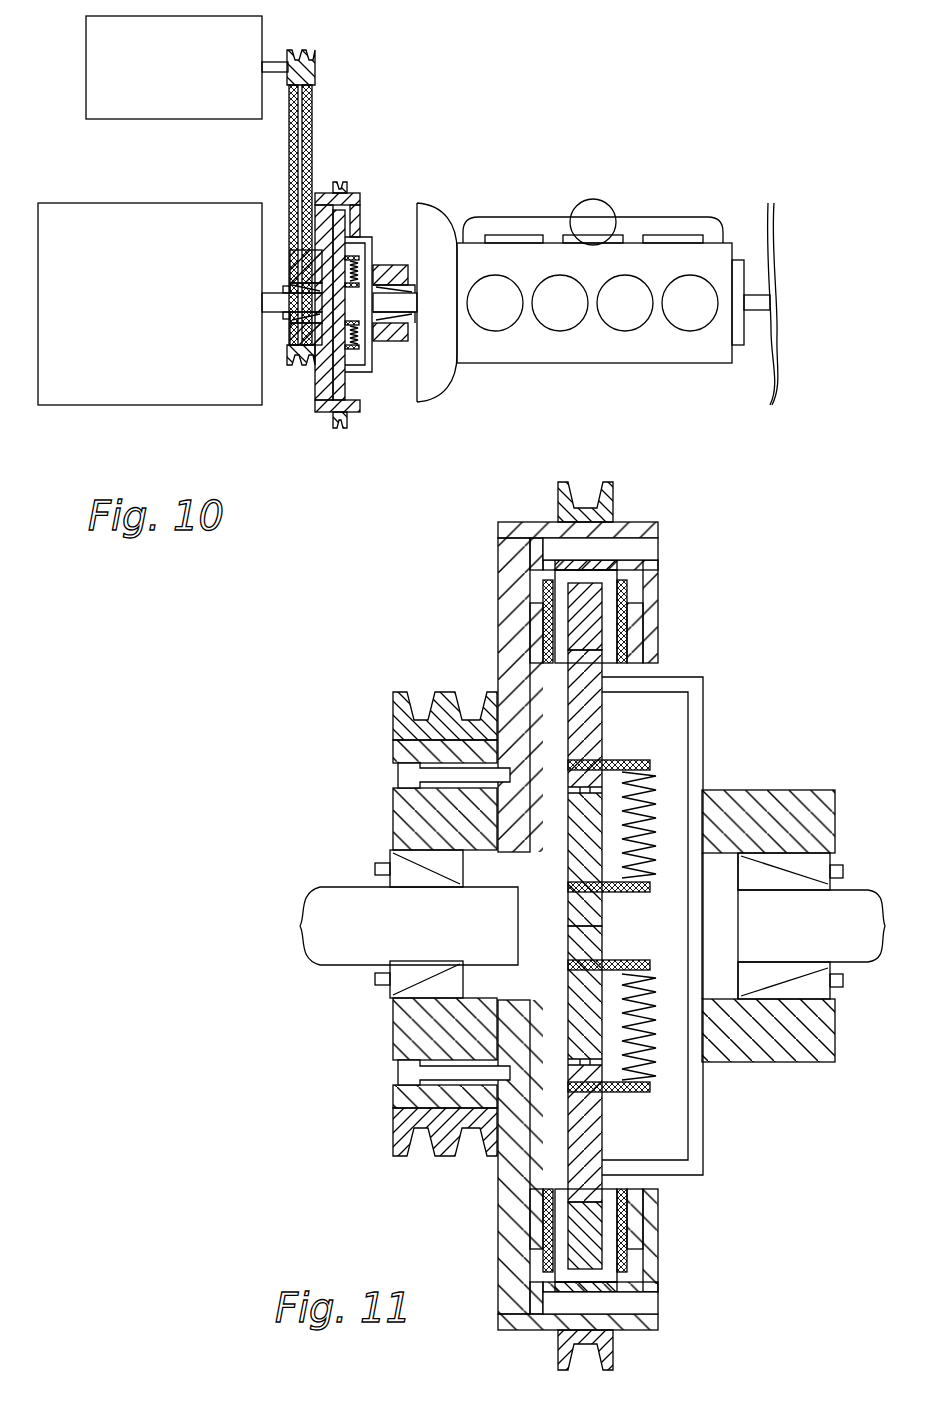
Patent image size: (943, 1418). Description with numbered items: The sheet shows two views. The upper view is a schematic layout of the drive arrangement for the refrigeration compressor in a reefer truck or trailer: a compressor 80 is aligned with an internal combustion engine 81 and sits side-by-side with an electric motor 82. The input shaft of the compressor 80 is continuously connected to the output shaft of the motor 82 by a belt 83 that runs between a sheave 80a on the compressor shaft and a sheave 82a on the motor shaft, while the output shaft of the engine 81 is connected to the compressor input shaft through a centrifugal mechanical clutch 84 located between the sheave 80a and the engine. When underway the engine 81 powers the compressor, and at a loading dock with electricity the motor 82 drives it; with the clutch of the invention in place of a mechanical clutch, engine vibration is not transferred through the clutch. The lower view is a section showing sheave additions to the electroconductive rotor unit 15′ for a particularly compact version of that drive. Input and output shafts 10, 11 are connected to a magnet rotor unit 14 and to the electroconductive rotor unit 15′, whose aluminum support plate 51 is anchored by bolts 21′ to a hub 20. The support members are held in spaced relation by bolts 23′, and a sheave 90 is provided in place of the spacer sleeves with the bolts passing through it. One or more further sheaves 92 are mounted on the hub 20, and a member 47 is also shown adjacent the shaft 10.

In FIG. 10, the electric motor 82 is at (92, 48).
In FIG. 10, the sheave 82a is at (312, 53).
In FIG. 10, the belt 83 is at (315, 137).
In FIG. 10, the compressor 80 is at (97, 212).
In FIG. 10, the sheave 80a is at (298, 368).
In FIG. 10, the centrifugal mechanical clutch 84 is at (360, 412).
In FIG. 10, the internal combustion engine 81 is at (476, 255).
In FIG. 11, the electroconductive rotor unit 15′ is at (441, 557).
In FIG. 11, the support plate 51 is at (505, 605).
In FIG. 11, the sheave 90 is at (612, 490).
In FIG. 11, the bolts 23′ is at (660, 548).
In FIG. 11, the magnet rotor unit 14 is at (703, 720).
In FIG. 11, the sheaves 92 is at (398, 690).
In FIG. 11, the hub 20 is at (395, 752).
In FIG. 11, the bolts 21′ is at (398, 777).
In FIG. 11, the hub 47 is at (775, 792).
In FIG. 11, the output shaft 11 is at (322, 893).
In FIG. 11, the input shaft 10 is at (858, 897).